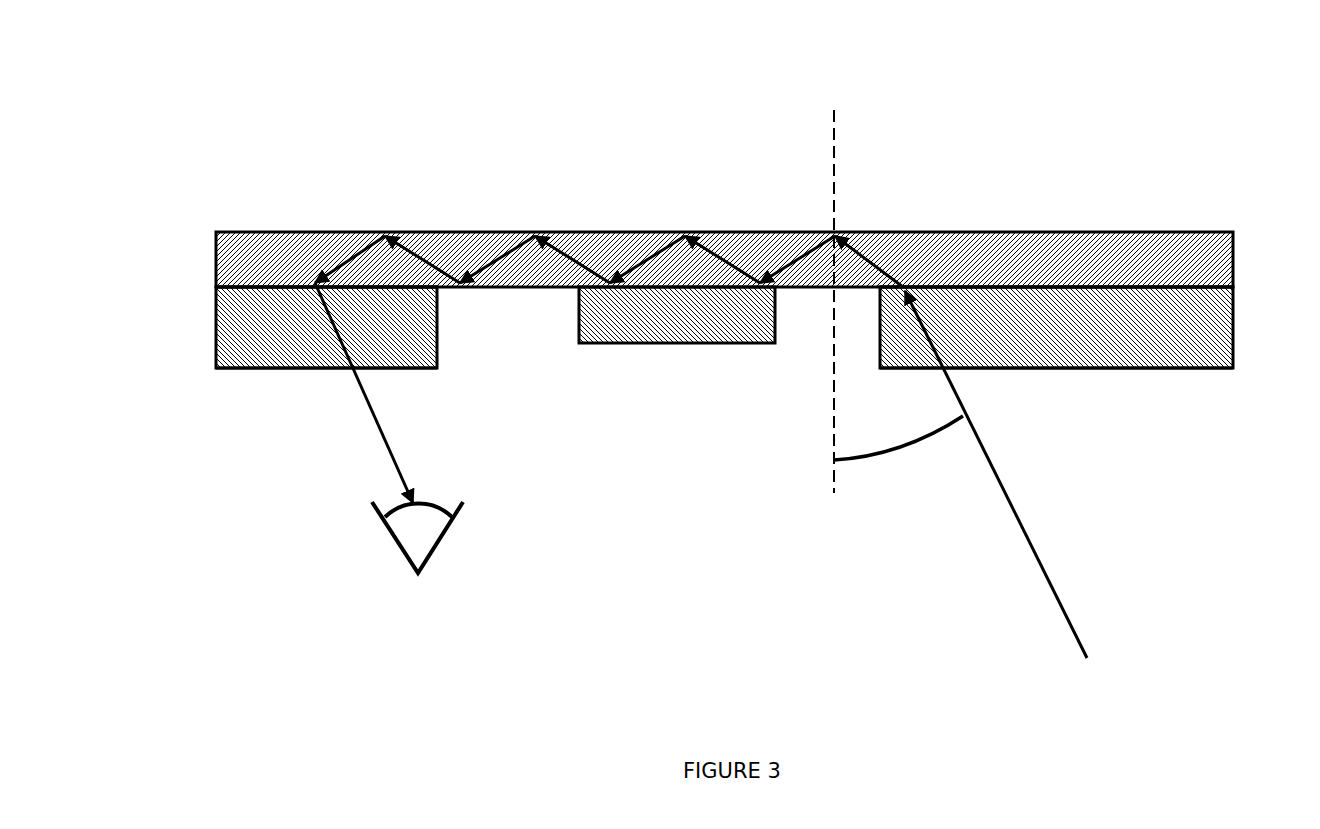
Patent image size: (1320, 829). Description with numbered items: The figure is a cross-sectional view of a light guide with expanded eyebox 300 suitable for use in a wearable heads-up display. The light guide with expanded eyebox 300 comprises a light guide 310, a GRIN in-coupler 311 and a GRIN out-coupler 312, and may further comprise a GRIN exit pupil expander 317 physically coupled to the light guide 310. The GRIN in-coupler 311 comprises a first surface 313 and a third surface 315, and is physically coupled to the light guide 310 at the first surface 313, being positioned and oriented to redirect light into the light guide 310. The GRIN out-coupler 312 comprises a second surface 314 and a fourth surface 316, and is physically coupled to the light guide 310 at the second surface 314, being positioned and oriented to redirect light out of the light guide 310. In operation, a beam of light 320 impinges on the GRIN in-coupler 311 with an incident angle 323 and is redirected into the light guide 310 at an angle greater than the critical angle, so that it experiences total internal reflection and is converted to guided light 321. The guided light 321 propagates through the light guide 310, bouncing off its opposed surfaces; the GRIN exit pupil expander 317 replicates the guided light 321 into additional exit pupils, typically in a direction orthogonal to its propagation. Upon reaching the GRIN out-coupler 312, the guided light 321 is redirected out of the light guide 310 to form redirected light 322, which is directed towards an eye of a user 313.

The light guide with expanded eyebox 300 is at (291, 586).
The light guide 310 is at (263, 273).
The GRIN in-coupler 311 is at (1185, 313).
The GRIN out-coupler 312 is at (230, 318).
The first surface 313 is at (1080, 284).
The second surface 314 is at (282, 285).
The third surface 315 is at (1079, 368).
The fourth surface 316 is at (300, 368).
The GRIN exit pupil expander 317 is at (652, 325).
The beam of light 320 is at (1020, 532).
The guided light 321 is at (786, 265).
The redirected light 322 is at (383, 432).
The incident angle 323 is at (951, 422).